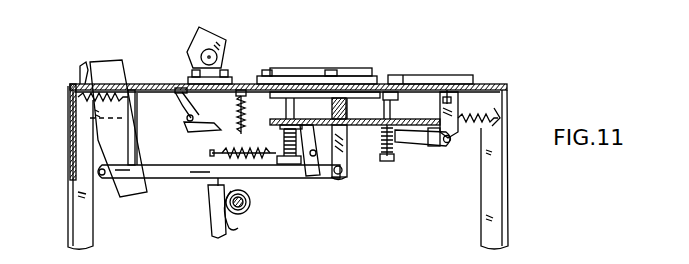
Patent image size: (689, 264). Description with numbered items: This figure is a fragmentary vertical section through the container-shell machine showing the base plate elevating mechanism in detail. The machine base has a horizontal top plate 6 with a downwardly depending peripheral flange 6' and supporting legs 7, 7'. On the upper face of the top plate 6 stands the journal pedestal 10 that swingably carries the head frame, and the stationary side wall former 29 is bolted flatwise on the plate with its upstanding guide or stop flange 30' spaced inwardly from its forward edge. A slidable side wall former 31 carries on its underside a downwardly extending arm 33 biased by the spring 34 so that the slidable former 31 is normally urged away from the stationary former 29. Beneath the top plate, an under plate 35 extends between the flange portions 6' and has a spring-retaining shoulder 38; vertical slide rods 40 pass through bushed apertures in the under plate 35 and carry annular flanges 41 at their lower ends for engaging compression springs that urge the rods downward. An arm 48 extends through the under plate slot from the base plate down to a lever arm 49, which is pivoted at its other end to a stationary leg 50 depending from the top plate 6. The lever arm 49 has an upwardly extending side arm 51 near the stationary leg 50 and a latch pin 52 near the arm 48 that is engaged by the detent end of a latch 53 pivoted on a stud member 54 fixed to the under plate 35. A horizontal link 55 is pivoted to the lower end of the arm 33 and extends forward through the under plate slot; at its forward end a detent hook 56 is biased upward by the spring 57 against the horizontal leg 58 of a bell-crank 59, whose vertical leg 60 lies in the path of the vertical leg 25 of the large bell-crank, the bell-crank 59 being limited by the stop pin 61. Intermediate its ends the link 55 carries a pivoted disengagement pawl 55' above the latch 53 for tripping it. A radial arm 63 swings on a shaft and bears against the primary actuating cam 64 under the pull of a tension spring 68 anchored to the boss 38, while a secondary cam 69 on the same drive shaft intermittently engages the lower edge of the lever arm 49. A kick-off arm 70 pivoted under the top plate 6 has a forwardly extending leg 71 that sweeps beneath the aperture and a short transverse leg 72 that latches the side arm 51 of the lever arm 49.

The top plate 6 is at (288, 108).
The peripheral flange 6' is at (63, 121).
The supporting leg 7 is at (506, 169).
The supporting leg 7' is at (65, 167).
The journal pedestal 10 is at (224, 62).
The vertical leg 25 is at (115, 58).
The side wall former 29 is at (305, 76).
The guide or stop flange 30' is at (281, 53).
The slidable side wall former 31 is at (442, 80).
The downwardly extending arm 33 is at (455, 110).
The spring 34 is at (497, 124).
The under plate 35 is at (350, 140).
The spring-retaining shoulder 38 is at (296, 176).
The slide rod 40 is at (355, 111).
The annular flange 41 is at (388, 161).
The arm 48 is at (349, 154).
The lever arm 49 is at (180, 179).
The stationary leg 50 is at (90, 140).
The side arm 51 is at (137, 140).
The latch pin 52 is at (338, 182).
The latch 53 is at (311, 178).
The stud member 54 is at (294, 130).
The horizontal link 55 is at (422, 144).
The disengagement pawl 55' is at (350, 108).
The detent hook 56 is at (212, 149).
The spring 57 is at (244, 110).
The horizontal leg 58 is at (236, 118).
The bell-crank 59 is at (192, 135).
The vertical leg 60 is at (176, 106).
The stop pin 61 is at (185, 92).
The radial arm 63 is at (219, 222).
The primary actuating cam 64 is at (240, 224).
The tension spring 68 is at (255, 160).
The secondary cam 69 is at (218, 195).
The kick-off arm 70 is at (242, 88).
The forwardly extending leg 71 is at (364, 96).
The transverse leg 72 is at (150, 87).